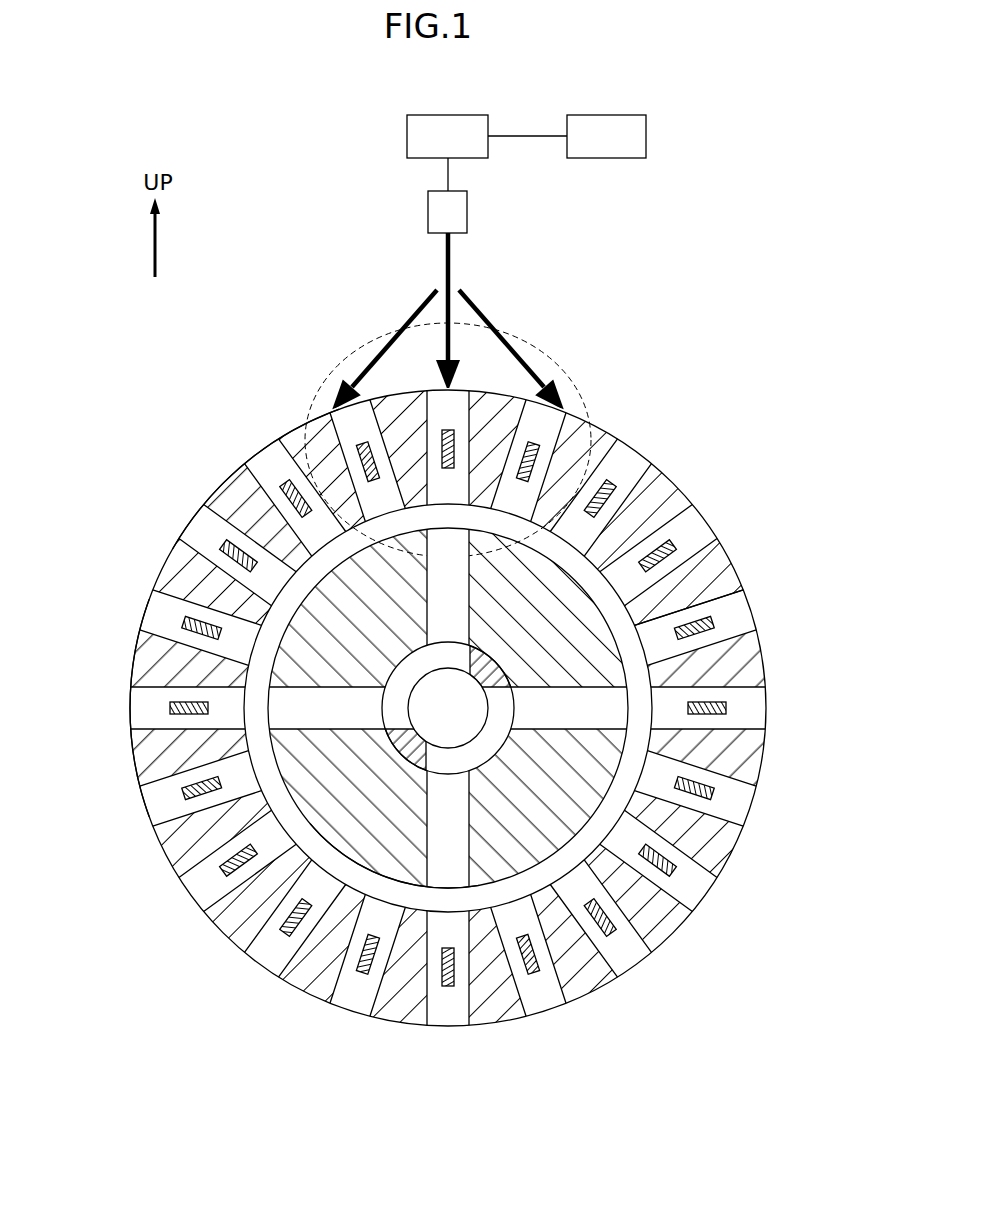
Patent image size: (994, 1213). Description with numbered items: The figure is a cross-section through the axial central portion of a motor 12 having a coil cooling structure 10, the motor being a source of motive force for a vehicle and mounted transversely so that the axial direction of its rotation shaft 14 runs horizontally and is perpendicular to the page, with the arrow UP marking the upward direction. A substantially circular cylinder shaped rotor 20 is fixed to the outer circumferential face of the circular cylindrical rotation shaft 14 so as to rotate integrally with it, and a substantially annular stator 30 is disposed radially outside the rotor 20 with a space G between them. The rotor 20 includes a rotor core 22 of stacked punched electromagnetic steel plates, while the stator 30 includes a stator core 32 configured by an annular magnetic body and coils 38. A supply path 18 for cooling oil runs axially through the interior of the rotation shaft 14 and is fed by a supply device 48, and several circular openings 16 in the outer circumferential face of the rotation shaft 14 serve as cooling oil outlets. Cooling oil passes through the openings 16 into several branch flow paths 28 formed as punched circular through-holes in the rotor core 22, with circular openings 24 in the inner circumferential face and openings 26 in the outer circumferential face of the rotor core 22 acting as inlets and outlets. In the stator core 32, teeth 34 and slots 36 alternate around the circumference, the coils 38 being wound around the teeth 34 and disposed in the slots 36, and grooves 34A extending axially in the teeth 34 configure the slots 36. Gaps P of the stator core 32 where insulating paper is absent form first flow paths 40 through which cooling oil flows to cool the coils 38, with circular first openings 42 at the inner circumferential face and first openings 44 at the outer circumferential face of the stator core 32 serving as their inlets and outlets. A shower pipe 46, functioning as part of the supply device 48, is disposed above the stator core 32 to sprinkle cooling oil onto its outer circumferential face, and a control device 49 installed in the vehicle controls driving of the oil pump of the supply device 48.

The coil cooling structure 10 is at (436, 617).
The motor 12 is at (235, 464).
The rotation shaft 14 is at (493, 663).
The openings 16 is at (448, 653).
The supply path 18 is at (423, 753).
The rotor 20 is at (280, 788).
The rotor core 22 is at (365, 866).
The openings 24 is at (632, 928).
The openings 26 is at (662, 676).
The branch flow paths 28 is at (466, 543).
The stator 30 is at (160, 562).
The stator core 32 is at (133, 648).
The teeth 34 is at (723, 567).
The grooves 34A is at (717, 597).
The slots 36 is at (693, 530).
The coils 38 is at (611, 480).
The first flow paths 40 is at (210, 882).
The first openings 42 is at (416, 894).
The first openings 44 is at (192, 517).
The shower pipe 46 is at (468, 212).
The supply device 48 is at (407, 141).
The control device 49 is at (646, 138).
The space G is at (616, 799).
The gaps P is at (624, 930).